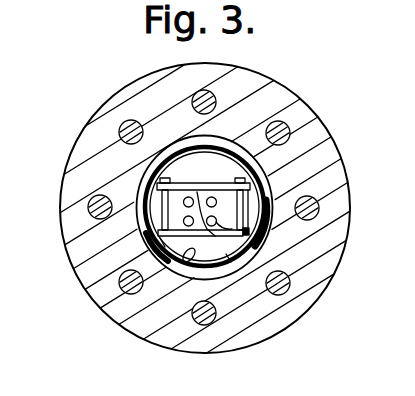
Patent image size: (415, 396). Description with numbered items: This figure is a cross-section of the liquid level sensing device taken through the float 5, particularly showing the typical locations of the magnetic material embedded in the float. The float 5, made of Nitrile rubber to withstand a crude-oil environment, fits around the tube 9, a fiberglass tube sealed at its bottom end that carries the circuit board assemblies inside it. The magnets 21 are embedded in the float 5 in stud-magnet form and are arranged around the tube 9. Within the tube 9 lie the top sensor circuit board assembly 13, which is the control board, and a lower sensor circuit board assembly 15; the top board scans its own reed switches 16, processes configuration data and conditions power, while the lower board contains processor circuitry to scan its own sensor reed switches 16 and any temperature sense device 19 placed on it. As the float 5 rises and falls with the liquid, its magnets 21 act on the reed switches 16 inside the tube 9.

The float 5 is at (349, 230).
The tube 9 is at (140, 200).
The top sensor circuit board assembly 13 is at (198, 185).
The lower sensor circuit board assembly 15 is at (252, 229).
The sensor reed switches 16 is at (215, 236).
The temperature sense device 19 is at (185, 261).
The magnets 21 is at (290, 136).